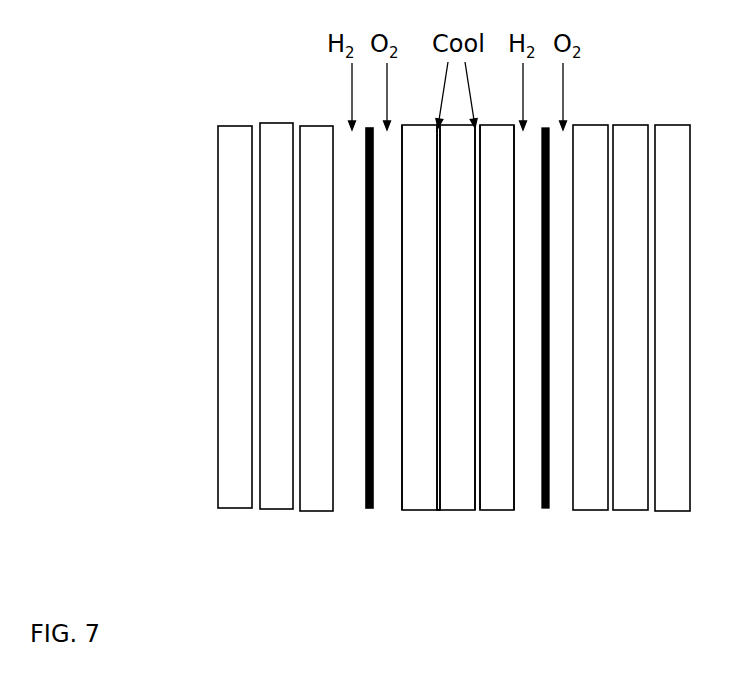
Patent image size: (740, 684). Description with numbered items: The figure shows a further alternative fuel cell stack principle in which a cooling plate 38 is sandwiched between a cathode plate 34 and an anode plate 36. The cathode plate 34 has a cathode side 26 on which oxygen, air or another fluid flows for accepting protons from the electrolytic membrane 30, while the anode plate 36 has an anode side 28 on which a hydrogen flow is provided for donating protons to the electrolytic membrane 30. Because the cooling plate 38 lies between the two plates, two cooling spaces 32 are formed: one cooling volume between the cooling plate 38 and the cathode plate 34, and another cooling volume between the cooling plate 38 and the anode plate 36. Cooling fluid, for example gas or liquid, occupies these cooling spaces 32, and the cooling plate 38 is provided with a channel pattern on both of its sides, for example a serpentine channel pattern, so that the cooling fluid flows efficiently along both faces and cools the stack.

The cathode side 26 is at (370, 366).
The anode side 28 is at (551, 366).
The electrolytic membrane 30 is at (558, 502).
The cooling space 32 is at (438, 520).
The cathode plate 34 is at (416, 520).
The anode plate 36 is at (500, 519).
The cooling plate 38 is at (458, 520).